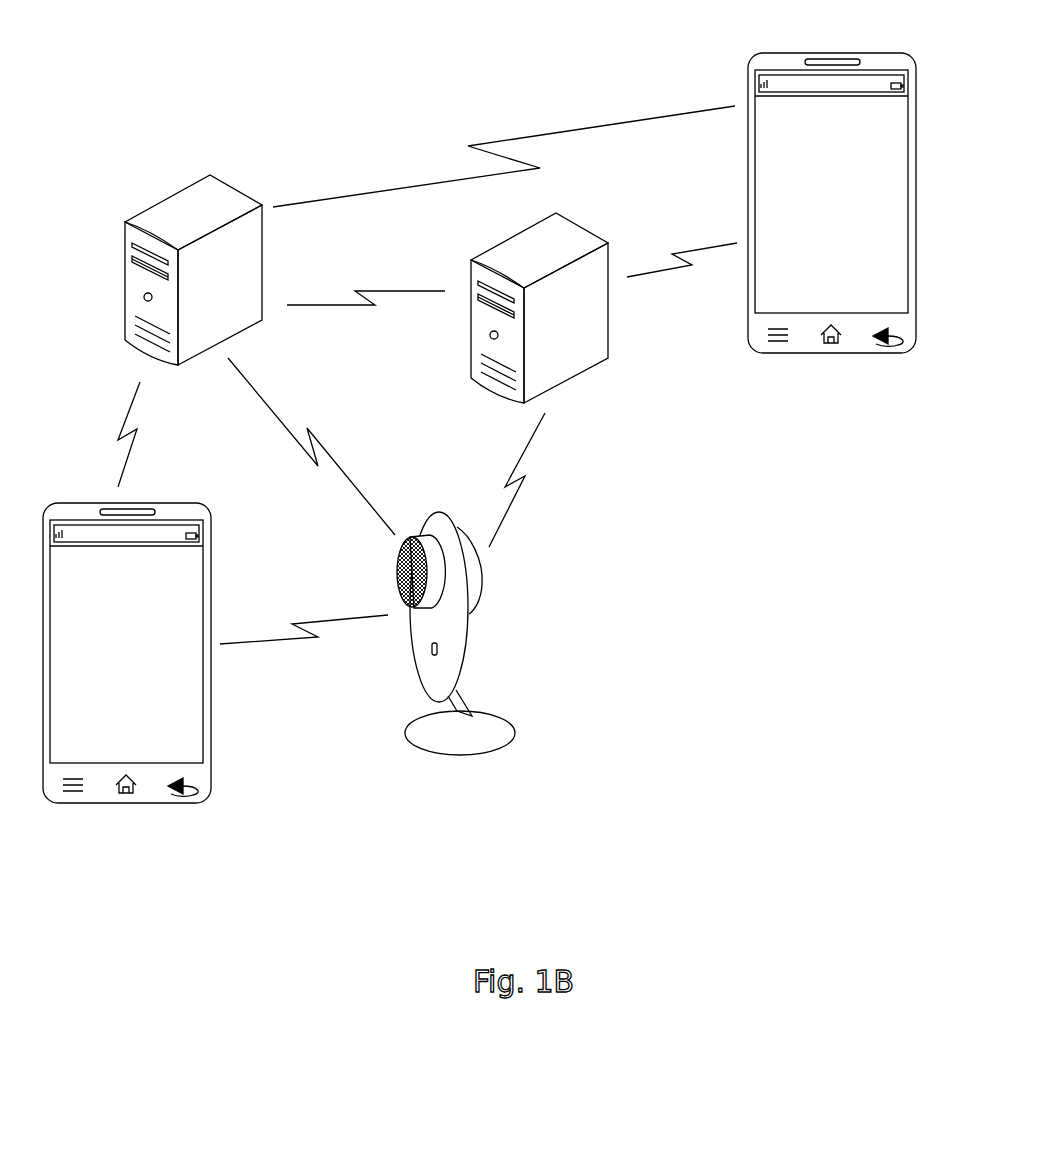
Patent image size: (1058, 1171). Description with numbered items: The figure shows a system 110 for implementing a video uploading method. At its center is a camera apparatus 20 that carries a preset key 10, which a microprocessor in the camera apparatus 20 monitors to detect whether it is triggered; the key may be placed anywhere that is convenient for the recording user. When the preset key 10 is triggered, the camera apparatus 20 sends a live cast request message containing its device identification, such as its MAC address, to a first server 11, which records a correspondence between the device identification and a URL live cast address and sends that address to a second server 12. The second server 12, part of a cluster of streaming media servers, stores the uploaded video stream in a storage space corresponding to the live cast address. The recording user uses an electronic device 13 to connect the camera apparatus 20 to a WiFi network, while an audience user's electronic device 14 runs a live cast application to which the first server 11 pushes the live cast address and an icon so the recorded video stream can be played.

The system 110 is at (500, 26).
The first server 11 is at (263, 283).
The second server 12 is at (609, 260).
The electronic device 13 is at (210, 538).
The electronic device 14 is at (917, 90).
The camera apparatus 20 is at (454, 633).
The preset key 10 is at (431, 649).